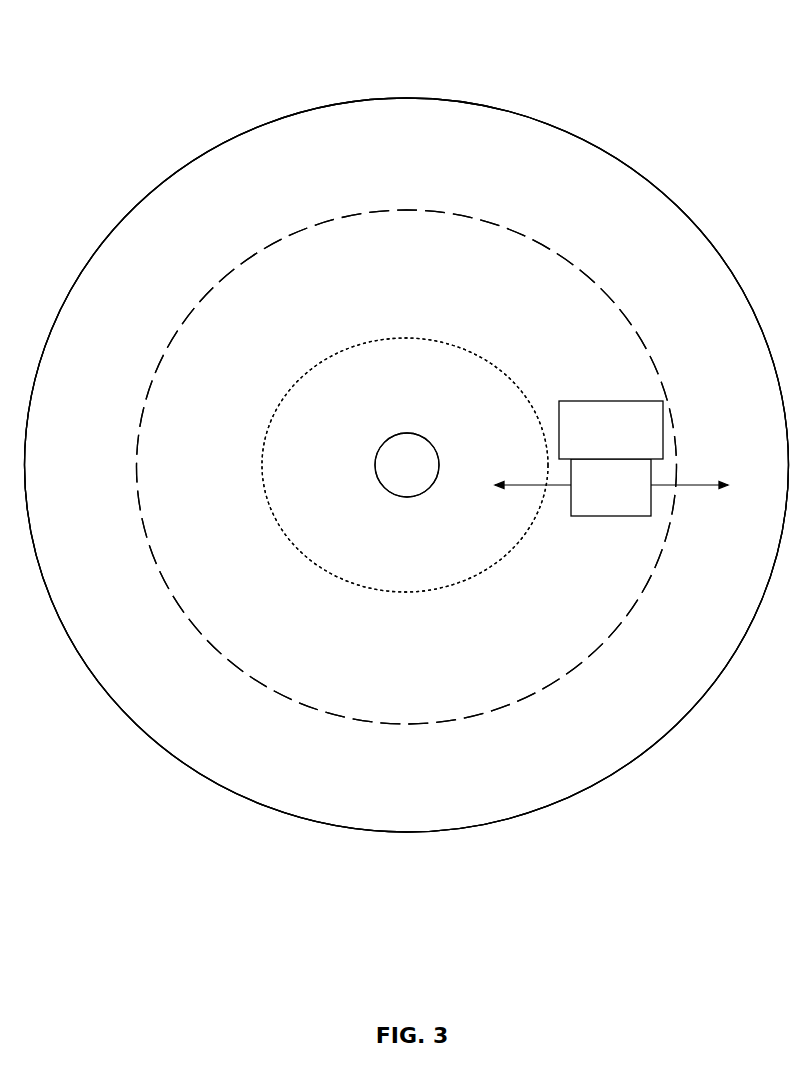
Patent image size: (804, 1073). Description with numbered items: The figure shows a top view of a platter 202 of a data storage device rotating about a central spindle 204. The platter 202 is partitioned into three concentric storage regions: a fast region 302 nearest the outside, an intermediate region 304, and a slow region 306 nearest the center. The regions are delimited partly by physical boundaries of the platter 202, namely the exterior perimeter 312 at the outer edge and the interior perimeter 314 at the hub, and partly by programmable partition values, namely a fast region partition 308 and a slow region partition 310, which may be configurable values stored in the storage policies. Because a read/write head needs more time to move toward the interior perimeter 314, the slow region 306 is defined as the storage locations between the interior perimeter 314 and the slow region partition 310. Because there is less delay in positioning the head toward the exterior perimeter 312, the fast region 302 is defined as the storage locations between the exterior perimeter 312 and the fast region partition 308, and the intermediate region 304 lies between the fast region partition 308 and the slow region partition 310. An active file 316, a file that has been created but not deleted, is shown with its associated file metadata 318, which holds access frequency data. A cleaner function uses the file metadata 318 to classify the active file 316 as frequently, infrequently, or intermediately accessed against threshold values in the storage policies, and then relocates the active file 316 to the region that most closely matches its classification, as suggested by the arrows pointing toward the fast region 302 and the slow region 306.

The platter 202 is at (596, 80).
The spindle 204 is at (391, 476).
The fast region 302 is at (394, 188).
The intermediate region 304 is at (391, 310).
The slow region 306 is at (391, 430).
The fast region partition 308 is at (548, 683).
The slow region partition 310 is at (288, 538).
The exterior perimeter 312 is at (465, 832).
The interior perimeter 314 is at (407, 497).
The active file 316 is at (640, 504).
The file metadata 318 is at (651, 411).